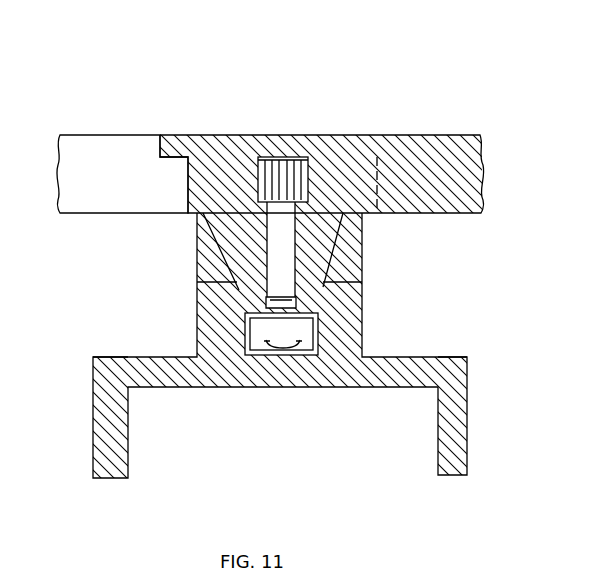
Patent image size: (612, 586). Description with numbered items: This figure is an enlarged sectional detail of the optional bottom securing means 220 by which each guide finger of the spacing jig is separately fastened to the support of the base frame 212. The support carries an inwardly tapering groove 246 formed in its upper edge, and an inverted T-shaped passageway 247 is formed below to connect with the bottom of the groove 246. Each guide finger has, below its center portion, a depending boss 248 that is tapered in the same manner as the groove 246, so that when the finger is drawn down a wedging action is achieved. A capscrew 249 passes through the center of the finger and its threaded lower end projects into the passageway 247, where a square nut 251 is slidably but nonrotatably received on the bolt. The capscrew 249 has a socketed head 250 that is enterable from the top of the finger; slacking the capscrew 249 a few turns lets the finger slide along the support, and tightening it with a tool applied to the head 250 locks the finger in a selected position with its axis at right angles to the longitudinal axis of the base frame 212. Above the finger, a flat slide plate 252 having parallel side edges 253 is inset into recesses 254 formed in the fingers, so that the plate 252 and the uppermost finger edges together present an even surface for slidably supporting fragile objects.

The securing means 220 is at (497, 63).
The parallel side edges 253 is at (158, 156).
The slide plate 252 is at (231, 148).
The recesses 254 is at (384, 147).
The socketed head 250 is at (283, 172).
The capscrew 249 is at (283, 272).
The inwardly tapering groove 246 is at (362, 282).
The depending boss 248 is at (245, 253).
The square nut 251 is at (261, 330).
The inverted T-shaped passageway 247 is at (307, 350).
The base frame 212 is at (468, 410).